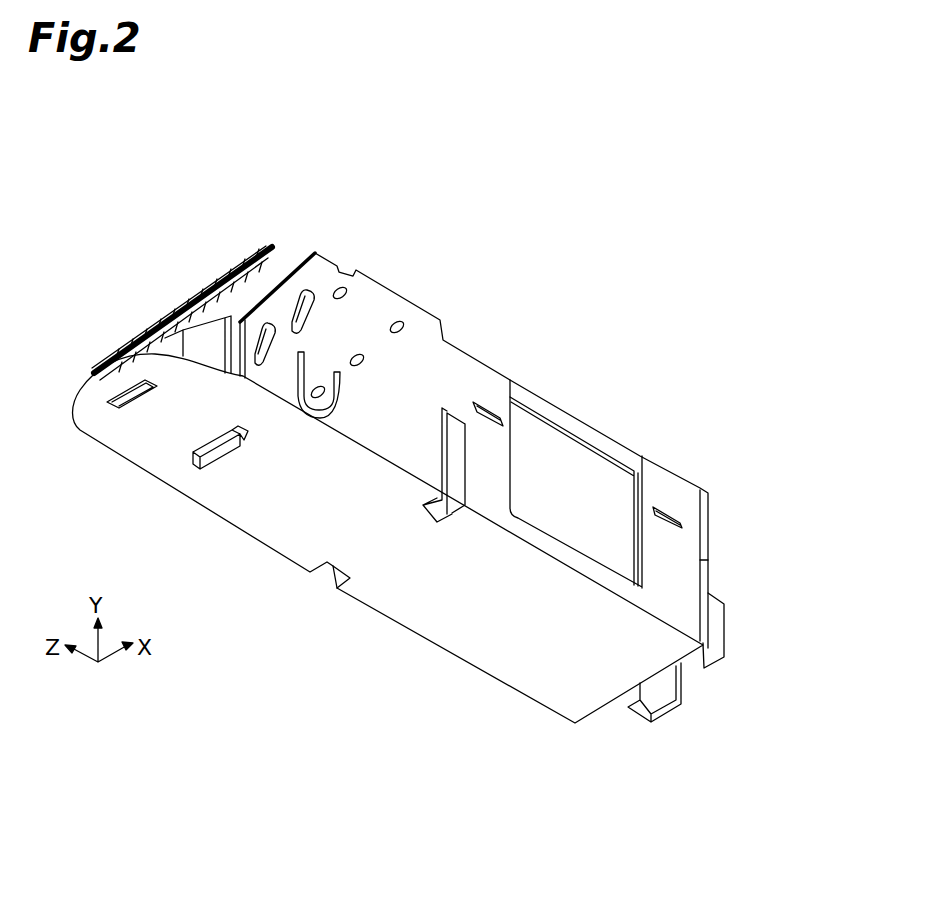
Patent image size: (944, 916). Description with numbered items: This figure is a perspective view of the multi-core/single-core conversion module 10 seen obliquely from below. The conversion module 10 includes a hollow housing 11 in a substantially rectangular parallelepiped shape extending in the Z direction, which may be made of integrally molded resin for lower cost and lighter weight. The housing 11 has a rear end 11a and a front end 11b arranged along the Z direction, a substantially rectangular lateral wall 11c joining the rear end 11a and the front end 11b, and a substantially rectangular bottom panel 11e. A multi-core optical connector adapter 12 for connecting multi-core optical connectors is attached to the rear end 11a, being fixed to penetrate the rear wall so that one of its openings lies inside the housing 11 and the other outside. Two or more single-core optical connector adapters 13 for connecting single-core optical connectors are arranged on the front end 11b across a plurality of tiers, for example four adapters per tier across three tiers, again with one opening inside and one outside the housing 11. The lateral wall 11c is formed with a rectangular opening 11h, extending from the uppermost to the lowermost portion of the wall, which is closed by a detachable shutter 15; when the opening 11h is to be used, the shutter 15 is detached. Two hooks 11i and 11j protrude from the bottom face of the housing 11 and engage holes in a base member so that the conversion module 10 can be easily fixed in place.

The conversion module 10 is at (630, 279).
The housing 11 is at (676, 456).
The rear end 11a is at (720, 567).
The front end 11b is at (170, 284).
The lateral wall 11c is at (460, 375).
The bottom panel 11e is at (502, 638).
The opening 11h is at (512, 448).
The hook 11i is at (218, 456).
The hook 11j is at (653, 710).
The multi-core optical connector adapter 12 is at (715, 637).
The single-core optical connector adapter 13 is at (240, 280).
The shutter 15 is at (604, 474).